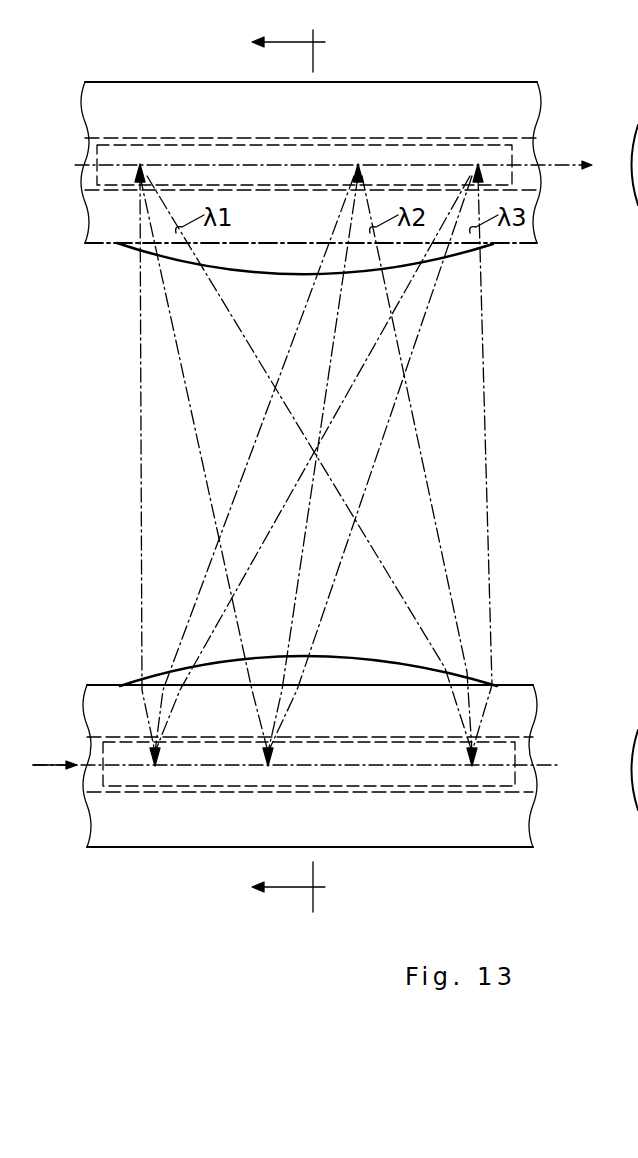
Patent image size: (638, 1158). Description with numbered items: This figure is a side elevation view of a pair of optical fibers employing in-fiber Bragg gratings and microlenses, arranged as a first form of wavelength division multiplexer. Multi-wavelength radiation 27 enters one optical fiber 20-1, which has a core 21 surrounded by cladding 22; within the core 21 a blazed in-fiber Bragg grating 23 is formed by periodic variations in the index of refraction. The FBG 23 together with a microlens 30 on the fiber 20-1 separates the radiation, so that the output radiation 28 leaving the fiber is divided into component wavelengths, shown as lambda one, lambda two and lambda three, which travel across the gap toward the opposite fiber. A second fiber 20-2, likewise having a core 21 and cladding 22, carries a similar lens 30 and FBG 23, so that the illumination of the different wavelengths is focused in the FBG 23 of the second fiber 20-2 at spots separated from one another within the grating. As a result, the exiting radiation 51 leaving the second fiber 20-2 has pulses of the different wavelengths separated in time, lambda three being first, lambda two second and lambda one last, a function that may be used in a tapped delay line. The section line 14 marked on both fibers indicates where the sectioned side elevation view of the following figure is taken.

The section line 14 is at (306, 471).
The optical fiber 20-1 is at (218, 853).
The second fiber 20-2 is at (431, 80).
The core 21 is at (525, 152).
The cladding 22 is at (491, 104).
The in-fiber Bragg grating 23 is at (145, 140).
The multi-wavelength radiation 27 is at (52, 770).
The output radiation 28 is at (372, 468).
The microlens 30 is at (462, 252).
The exiting radiation 51 is at (560, 169).